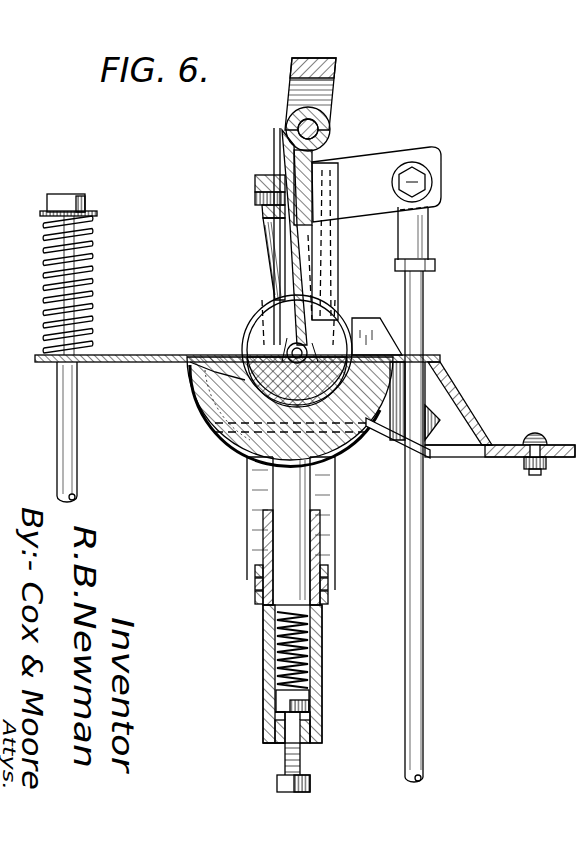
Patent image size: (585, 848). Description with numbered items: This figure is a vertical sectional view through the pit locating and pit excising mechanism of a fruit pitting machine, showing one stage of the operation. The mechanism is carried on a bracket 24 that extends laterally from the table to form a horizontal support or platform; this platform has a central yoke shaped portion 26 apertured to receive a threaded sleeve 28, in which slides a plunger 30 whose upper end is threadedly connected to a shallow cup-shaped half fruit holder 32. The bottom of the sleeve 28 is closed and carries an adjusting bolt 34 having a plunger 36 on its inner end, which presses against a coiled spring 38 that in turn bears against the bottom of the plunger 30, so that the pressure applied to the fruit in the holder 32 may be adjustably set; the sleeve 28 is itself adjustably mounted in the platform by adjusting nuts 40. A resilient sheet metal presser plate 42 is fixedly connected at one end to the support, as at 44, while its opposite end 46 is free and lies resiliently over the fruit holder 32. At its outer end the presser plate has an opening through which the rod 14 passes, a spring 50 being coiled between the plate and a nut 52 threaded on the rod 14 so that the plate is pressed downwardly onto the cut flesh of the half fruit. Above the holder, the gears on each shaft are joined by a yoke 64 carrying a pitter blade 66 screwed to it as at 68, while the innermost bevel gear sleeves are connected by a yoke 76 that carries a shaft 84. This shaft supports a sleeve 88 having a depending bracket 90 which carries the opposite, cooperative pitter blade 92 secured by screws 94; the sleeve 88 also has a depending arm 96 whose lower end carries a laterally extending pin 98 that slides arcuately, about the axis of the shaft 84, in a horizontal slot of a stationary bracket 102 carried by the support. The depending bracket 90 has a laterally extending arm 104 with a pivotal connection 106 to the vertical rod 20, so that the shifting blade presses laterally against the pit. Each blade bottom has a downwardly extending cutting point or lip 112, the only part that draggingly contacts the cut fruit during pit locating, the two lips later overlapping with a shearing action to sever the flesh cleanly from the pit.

The rod 14 is at (80, 445).
The vertical rod 20 is at (418, 643).
The bracket 24 is at (495, 460).
The yoke shaped portion 26 is at (322, 492).
The threaded sleeve 28 is at (268, 635).
The plunger 30 is at (276, 486).
The half fruit holder 32 is at (228, 440).
The adjusting bolt 34 is at (312, 781).
The plunger 36 is at (312, 700).
The coiled spring 38 is at (310, 641).
The adjusting nuts 40 is at (256, 570).
The presser plate 42 is at (464, 373).
The fixed connection of presser plate 44 is at (536, 433).
The free end of presser plate 46 is at (148, 355).
The spring 50 is at (94, 256).
The nut 52 is at (84, 197).
The yoke 64 is at (258, 171).
The pitter blade 66 is at (280, 258).
The screw connection of pitter blade 68 is at (255, 198).
The yoke 76 is at (340, 62).
The shaft 84 is at (330, 138).
The sleeve 88 is at (316, 123).
The depending bracket 90 is at (312, 213).
The pitter blade 92 is at (305, 237).
The screws 94 is at (330, 180).
The depending arm 96 is at (327, 268).
The pin 98 is at (304, 344).
The stationary bracket 102 is at (370, 335).
The laterally extending arm 104 is at (432, 150).
The pivotal connection 106 is at (433, 182).
The cutting point or lip 112 is at (215, 370).